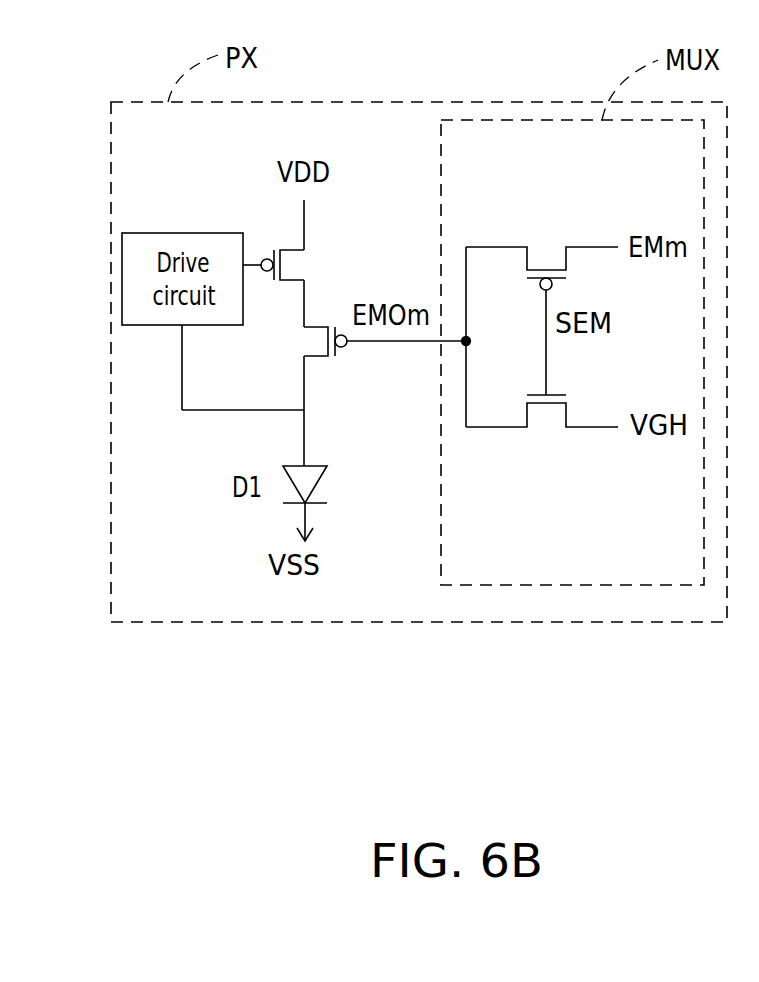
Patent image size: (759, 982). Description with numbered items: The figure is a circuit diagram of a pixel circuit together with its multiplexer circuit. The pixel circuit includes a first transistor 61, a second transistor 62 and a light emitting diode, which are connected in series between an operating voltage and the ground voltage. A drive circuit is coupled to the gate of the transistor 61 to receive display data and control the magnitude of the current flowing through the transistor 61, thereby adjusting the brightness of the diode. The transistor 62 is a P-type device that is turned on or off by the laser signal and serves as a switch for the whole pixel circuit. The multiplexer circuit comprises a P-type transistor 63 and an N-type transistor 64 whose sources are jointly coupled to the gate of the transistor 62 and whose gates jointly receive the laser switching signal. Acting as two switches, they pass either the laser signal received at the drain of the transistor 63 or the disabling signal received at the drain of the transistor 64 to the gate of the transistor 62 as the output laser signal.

The transistor 61 is at (290, 288).
The transistor 62 is at (307, 395).
The transistor 63 is at (542, 307).
The transistor 64 is at (542, 428).